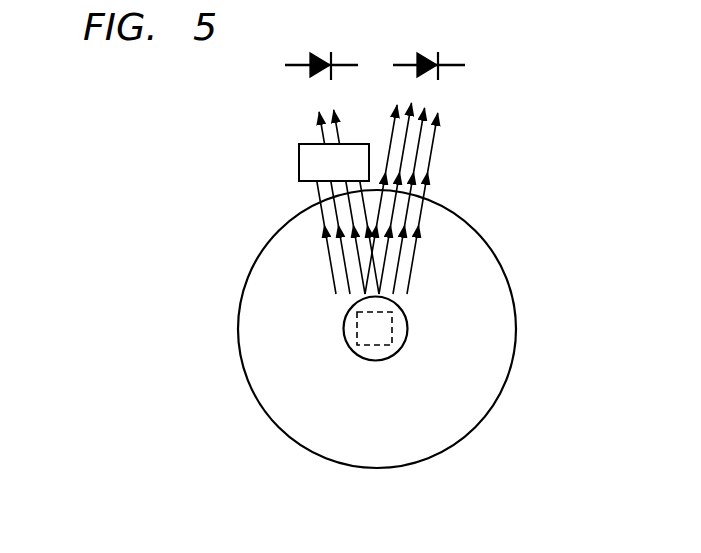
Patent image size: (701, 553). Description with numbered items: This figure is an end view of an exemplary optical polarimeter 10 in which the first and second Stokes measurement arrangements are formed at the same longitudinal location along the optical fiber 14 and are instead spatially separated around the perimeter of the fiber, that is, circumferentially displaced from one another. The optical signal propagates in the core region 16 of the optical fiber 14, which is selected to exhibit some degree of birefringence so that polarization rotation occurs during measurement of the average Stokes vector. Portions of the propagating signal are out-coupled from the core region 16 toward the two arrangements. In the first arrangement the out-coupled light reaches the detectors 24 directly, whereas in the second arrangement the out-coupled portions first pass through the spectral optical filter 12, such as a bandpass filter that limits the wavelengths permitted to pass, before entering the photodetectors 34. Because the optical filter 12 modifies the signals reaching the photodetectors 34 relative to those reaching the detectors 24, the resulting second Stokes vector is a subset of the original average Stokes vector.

The optical polarimeter 10 is at (200, 98).
The spectral (optical) filter 12 is at (298, 164).
The optical fiber 14 is at (348, 352).
The core region 16 is at (497, 297).
The photodetectors 34 is at (322, 53).
The detectors 24 is at (430, 53).